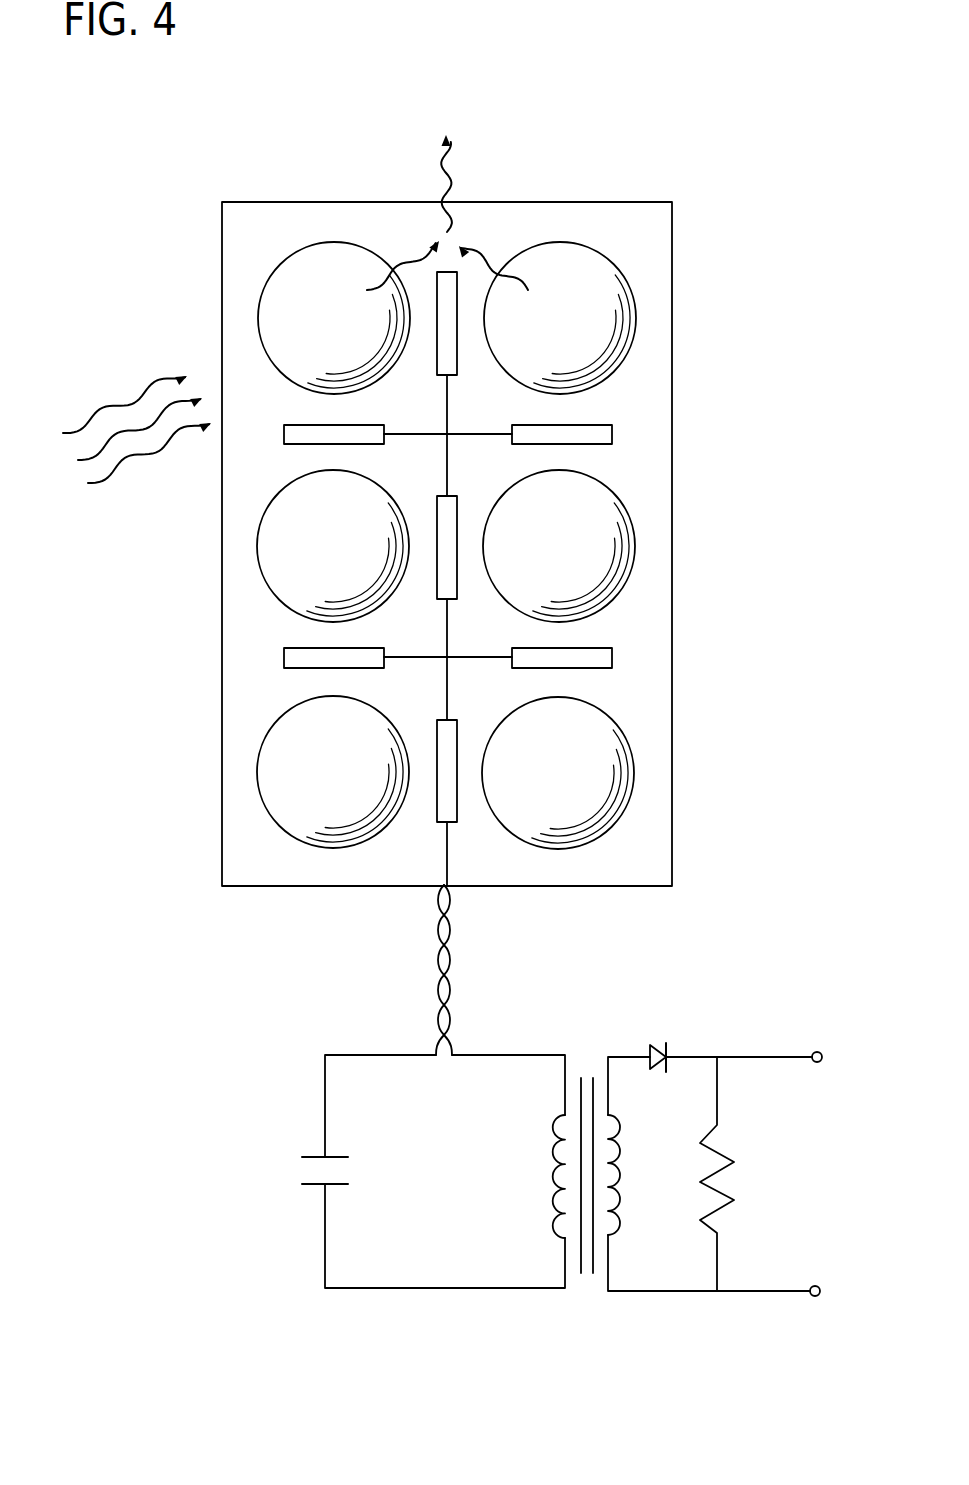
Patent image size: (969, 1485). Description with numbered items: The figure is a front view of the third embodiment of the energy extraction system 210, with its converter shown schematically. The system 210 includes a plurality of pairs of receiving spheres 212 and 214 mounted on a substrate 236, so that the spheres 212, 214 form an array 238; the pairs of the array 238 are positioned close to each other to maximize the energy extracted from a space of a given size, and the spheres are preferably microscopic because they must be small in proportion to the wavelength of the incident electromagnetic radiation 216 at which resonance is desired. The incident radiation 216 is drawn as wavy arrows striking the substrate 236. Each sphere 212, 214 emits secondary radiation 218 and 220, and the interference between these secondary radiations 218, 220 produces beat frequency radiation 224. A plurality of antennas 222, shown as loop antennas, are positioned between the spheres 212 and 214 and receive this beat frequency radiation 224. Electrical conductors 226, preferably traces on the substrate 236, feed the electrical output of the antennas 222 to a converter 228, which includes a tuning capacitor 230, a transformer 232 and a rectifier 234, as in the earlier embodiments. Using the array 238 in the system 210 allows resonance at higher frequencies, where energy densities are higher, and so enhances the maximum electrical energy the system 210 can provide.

The system 210 is at (199, 186).
The receiving means sphere 212 is at (260, 300).
The receiving means sphere 214 is at (632, 290).
The incident electromagnetic radiation 216 is at (104, 409).
The secondary radiation 218 is at (400, 267).
The secondary radiation 220 is at (493, 267).
The antenna 222 is at (457, 360).
The beat frequency radiation 224 is at (453, 158).
The electrical conductor 226 is at (447, 696).
The converter 228 is at (362, 1304).
The tuning capacitor 230 is at (290, 1170).
The transformer 232 is at (587, 1298).
The rectifier 234 is at (660, 1032).
The substrate 236 is at (672, 823).
The array 238 is at (651, 618).